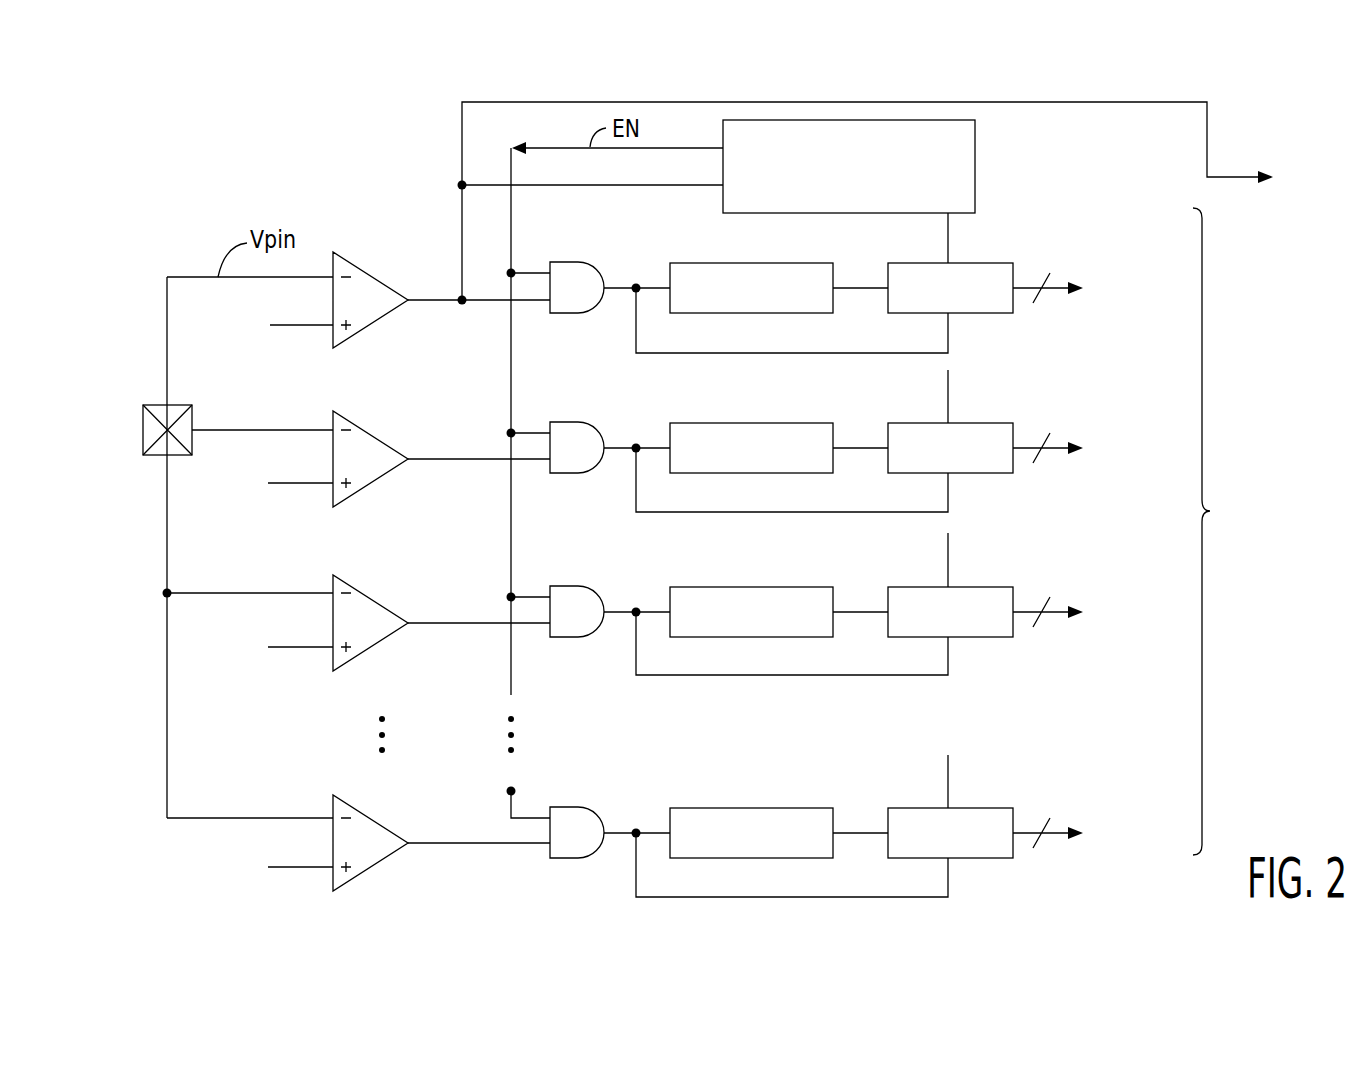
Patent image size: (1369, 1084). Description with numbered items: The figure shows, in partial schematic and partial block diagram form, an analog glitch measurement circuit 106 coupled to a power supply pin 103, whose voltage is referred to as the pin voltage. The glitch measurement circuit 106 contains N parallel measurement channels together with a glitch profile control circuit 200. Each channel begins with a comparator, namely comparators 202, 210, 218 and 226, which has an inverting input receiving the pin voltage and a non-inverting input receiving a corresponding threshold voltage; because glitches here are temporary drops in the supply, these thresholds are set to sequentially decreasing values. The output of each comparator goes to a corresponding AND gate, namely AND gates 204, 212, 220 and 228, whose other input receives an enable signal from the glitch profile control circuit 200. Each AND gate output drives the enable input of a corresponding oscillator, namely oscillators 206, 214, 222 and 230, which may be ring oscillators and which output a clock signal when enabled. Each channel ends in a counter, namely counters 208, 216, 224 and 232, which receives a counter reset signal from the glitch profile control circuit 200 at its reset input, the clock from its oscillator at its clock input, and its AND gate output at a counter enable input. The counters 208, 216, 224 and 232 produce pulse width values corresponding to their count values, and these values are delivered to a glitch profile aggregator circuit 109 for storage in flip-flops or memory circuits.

The analog glitch measurement circuit 106 is at (125, 225).
The power supply pin 103 is at (143, 405).
The glitch profile aggregator circuit 109 is at (1301, 583).
The glitch profile control circuit 200 is at (975, 177).
The comparator 202 is at (375, 277).
The AND gate 204 is at (572, 313).
The oscillator 206 is at (718, 263).
The counter 208 is at (905, 263).
The comparator 210 is at (385, 440).
The AND gate 212 is at (572, 473).
The oscillator 214 is at (715, 423).
The counter 216 is at (910, 423).
The comparator 218 is at (385, 600).
The AND gate 220 is at (575, 637).
The oscillator 222 is at (697, 587).
The counter 224 is at (988, 637).
The comparator 226 is at (385, 818).
The AND gate 228 is at (575, 807).
The oscillator 230 is at (752, 808).
The counter 232 is at (905, 808).